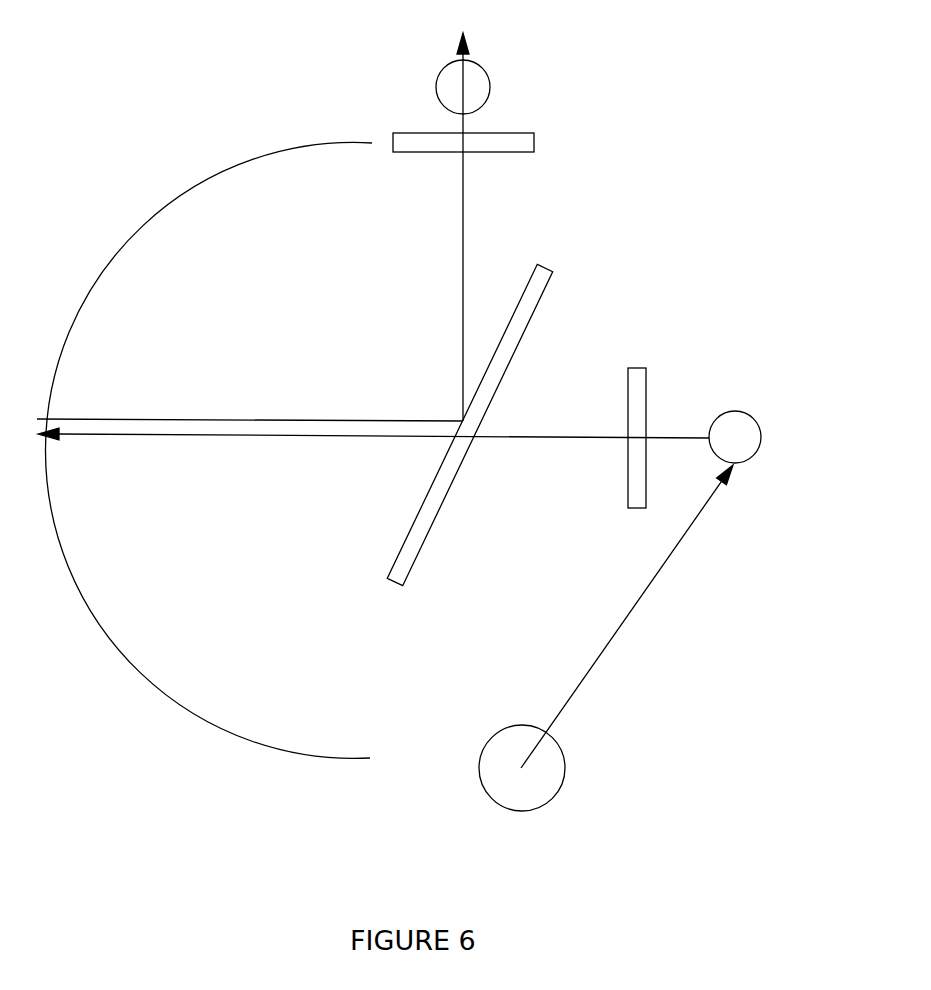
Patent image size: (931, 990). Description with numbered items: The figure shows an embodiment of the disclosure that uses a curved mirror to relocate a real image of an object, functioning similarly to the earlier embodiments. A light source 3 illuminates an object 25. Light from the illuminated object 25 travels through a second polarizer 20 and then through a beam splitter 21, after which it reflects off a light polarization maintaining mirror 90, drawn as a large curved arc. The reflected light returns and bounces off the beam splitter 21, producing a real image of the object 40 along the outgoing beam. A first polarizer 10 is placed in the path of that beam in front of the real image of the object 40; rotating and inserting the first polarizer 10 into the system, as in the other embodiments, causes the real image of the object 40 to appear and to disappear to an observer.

The light polarization maintaining mirror 90 is at (177, 192).
The real image of object 40 is at (490, 86).
The first polarizer 10 is at (534, 137).
The beam splitter 21 is at (553, 272).
The second polarizer 20 is at (646, 372).
The object 25 is at (752, 456).
The light source 3 is at (553, 797).